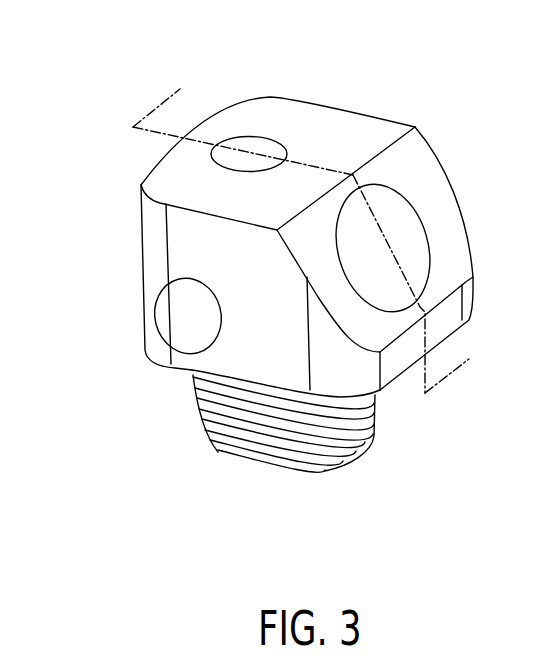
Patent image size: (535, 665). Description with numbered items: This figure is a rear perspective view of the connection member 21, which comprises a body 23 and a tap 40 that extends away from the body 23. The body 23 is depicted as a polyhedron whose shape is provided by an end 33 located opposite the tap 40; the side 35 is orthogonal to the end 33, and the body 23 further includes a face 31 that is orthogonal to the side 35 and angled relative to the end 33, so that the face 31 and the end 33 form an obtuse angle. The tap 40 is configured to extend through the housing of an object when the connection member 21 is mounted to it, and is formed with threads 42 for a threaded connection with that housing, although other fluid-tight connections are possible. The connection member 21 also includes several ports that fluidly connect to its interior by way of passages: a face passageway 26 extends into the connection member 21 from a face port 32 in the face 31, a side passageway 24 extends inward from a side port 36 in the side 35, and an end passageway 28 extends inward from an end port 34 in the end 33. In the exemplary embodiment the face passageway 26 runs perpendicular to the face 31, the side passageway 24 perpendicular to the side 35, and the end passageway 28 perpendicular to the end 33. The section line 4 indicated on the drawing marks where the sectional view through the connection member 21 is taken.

The section line 4- 4 is at (313, 224).
The connection member 21 is at (287, 108).
The body 23 is at (112, 210).
The side passageway 24 is at (182, 319).
The face passageway 26 is at (401, 250).
The end passageway 28 is at (256, 158).
The face 31 is at (413, 150).
The face port 32 is at (404, 246).
The end 33 is at (340, 120).
The end port 34 is at (292, 160).
The side 35 is at (238, 365).
The side port 36 is at (153, 292).
The tap 40 is at (296, 489).
The threads 42 is at (349, 447).